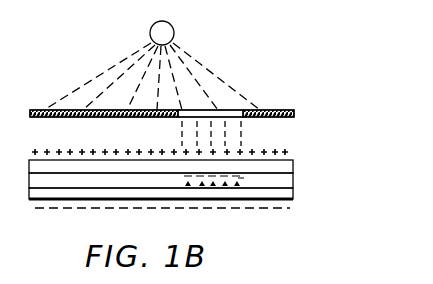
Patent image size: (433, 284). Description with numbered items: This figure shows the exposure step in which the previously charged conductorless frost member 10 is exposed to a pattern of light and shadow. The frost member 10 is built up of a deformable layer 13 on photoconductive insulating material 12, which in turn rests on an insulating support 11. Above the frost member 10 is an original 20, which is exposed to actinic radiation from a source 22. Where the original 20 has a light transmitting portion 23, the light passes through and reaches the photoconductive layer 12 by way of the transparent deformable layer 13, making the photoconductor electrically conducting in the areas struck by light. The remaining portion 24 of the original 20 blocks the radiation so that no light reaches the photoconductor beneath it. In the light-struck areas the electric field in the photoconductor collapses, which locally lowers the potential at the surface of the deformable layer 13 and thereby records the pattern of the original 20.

The conductorless frost member 10 is at (199, 185).
The insulating support 11 is at (294, 199).
The photoconductive insulating material 12 is at (294, 183).
The deformable layer 13 is at (294, 165).
The original 20 is at (191, 105).
The source 22 is at (150, 32).
The light transmitting portion 23 is at (230, 110).
The opaque region 24 is at (42, 110).